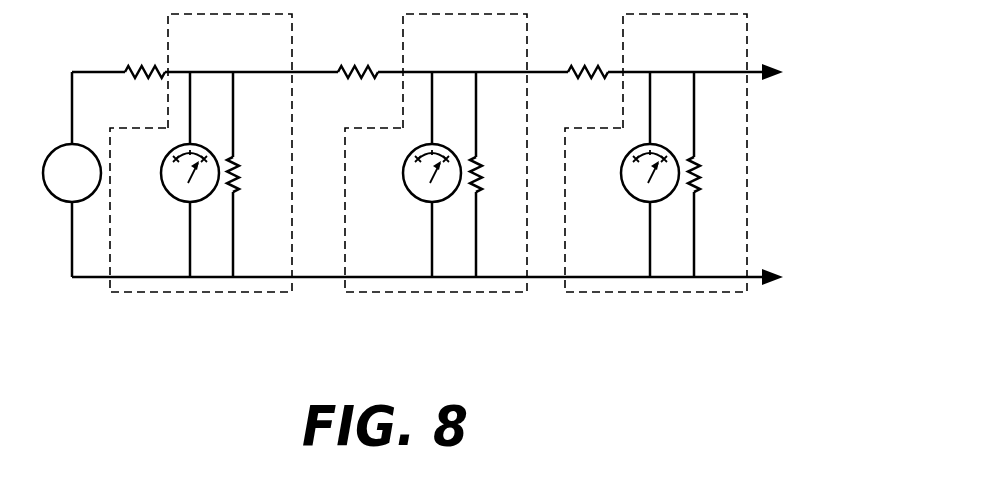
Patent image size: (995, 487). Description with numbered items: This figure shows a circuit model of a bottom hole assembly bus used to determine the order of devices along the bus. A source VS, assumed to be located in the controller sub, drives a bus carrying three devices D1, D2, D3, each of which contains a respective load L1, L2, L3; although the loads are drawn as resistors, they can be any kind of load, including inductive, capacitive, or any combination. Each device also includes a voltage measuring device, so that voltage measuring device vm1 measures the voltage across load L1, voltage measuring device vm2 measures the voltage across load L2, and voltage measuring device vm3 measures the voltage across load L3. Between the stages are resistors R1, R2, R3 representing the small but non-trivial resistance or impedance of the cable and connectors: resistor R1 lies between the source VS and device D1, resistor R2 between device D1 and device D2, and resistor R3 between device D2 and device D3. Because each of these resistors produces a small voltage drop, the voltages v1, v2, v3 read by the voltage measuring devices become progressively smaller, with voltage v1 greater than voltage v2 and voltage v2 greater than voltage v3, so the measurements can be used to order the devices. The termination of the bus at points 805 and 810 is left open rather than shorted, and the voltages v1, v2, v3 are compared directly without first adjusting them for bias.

The termination point 805 is at (472, 54).
The termination point 810 is at (777, 275).
The source VS is at (72, 174).
The resistor R1 is at (145, 54).
The resistor R2 is at (358, 54).
The resistor R3 is at (588, 54).
The device D1 is at (201, 153).
The device D2 is at (436, 153).
The device D3 is at (656, 153).
The voltage v1 is at (193, 91).
The voltage v2 is at (432, 91).
The voltage v3 is at (647, 91).
The voltage measuring device vm1 is at (168, 210).
The voltage measuring device vm2 is at (409, 210).
The voltage measuring device vm3 is at (627, 210).
The load L1 is at (253, 174).
The load L2 is at (492, 174).
The load L3 is at (711, 174).